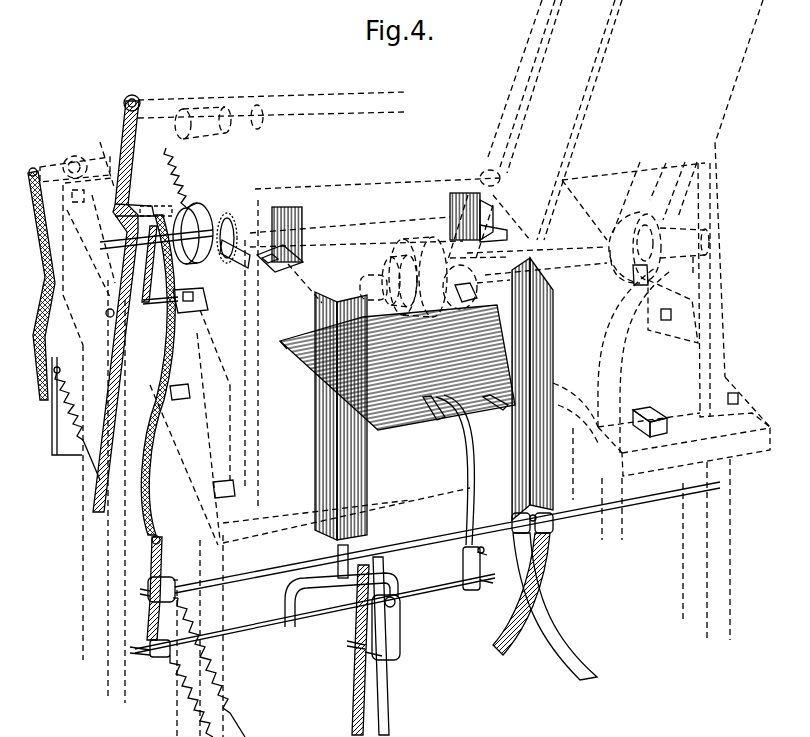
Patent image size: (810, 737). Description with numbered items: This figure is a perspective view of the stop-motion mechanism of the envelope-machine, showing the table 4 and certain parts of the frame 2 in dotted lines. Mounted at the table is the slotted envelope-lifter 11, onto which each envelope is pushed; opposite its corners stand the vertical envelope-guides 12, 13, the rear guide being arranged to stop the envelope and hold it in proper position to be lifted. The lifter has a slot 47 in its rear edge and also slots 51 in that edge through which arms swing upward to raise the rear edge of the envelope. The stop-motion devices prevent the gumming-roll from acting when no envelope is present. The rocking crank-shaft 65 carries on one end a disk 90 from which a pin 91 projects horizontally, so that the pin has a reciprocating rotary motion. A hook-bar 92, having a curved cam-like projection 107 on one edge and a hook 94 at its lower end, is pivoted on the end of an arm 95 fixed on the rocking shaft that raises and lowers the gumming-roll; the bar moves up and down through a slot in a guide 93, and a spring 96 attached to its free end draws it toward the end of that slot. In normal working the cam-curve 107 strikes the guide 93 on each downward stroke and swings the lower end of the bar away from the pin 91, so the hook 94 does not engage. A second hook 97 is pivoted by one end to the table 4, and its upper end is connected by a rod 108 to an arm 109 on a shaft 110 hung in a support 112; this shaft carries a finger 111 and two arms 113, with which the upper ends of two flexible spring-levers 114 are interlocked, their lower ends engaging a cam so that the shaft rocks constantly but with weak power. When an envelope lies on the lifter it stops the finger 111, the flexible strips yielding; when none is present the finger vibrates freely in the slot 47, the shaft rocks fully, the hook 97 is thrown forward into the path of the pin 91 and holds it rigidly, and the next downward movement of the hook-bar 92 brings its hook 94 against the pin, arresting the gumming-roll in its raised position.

The frame 2 is at (223, 658).
The table 4 is at (282, 448).
The slotted envelope-lifter 11 is at (295, 362).
The vertical envelope-guide 12 is at (382, 224).
The vertical envelope-guide 13 is at (434, 399).
The slot 47 is at (433, 423).
The slots 51 is at (495, 416).
The crank-shaft 65 is at (213, 244).
The disk 90 is at (180, 185).
The pin 91 is at (117, 240).
The hook-bar 92 is at (127, 123).
The guide 93 is at (100, 142).
The hook 94 is at (108, 313).
The arm 95 is at (165, 104).
The spring 96 is at (55, 368).
The hook 97 is at (170, 308).
The cam-like projection 107 is at (113, 208).
The rod 108 is at (168, 343).
The arm 109 is at (158, 562).
The shaft 110 is at (440, 594).
The finger 111 is at (463, 487).
The support 112 is at (285, 597).
The arms 113 is at (396, 627).
The spring-levers 114 is at (356, 697).